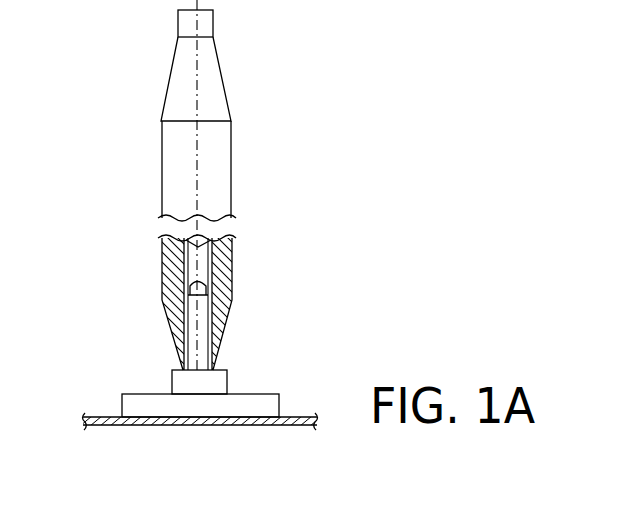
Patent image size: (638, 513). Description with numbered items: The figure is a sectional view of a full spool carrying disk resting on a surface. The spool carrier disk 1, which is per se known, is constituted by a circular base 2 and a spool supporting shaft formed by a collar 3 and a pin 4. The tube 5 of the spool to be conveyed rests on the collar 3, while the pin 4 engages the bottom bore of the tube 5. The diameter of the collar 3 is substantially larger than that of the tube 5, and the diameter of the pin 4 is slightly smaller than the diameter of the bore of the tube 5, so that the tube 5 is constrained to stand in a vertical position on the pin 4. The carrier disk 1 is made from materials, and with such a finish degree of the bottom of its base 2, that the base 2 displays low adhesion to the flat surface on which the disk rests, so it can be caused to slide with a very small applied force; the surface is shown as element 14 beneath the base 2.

The spool carrier disk 1 is at (127, 378).
The circular base 2 is at (279, 402).
The collar 3 is at (217, 382).
The pin 4 is at (205, 333).
The tube 5 is at (183, 360).
The substrate 14 is at (232, 425).